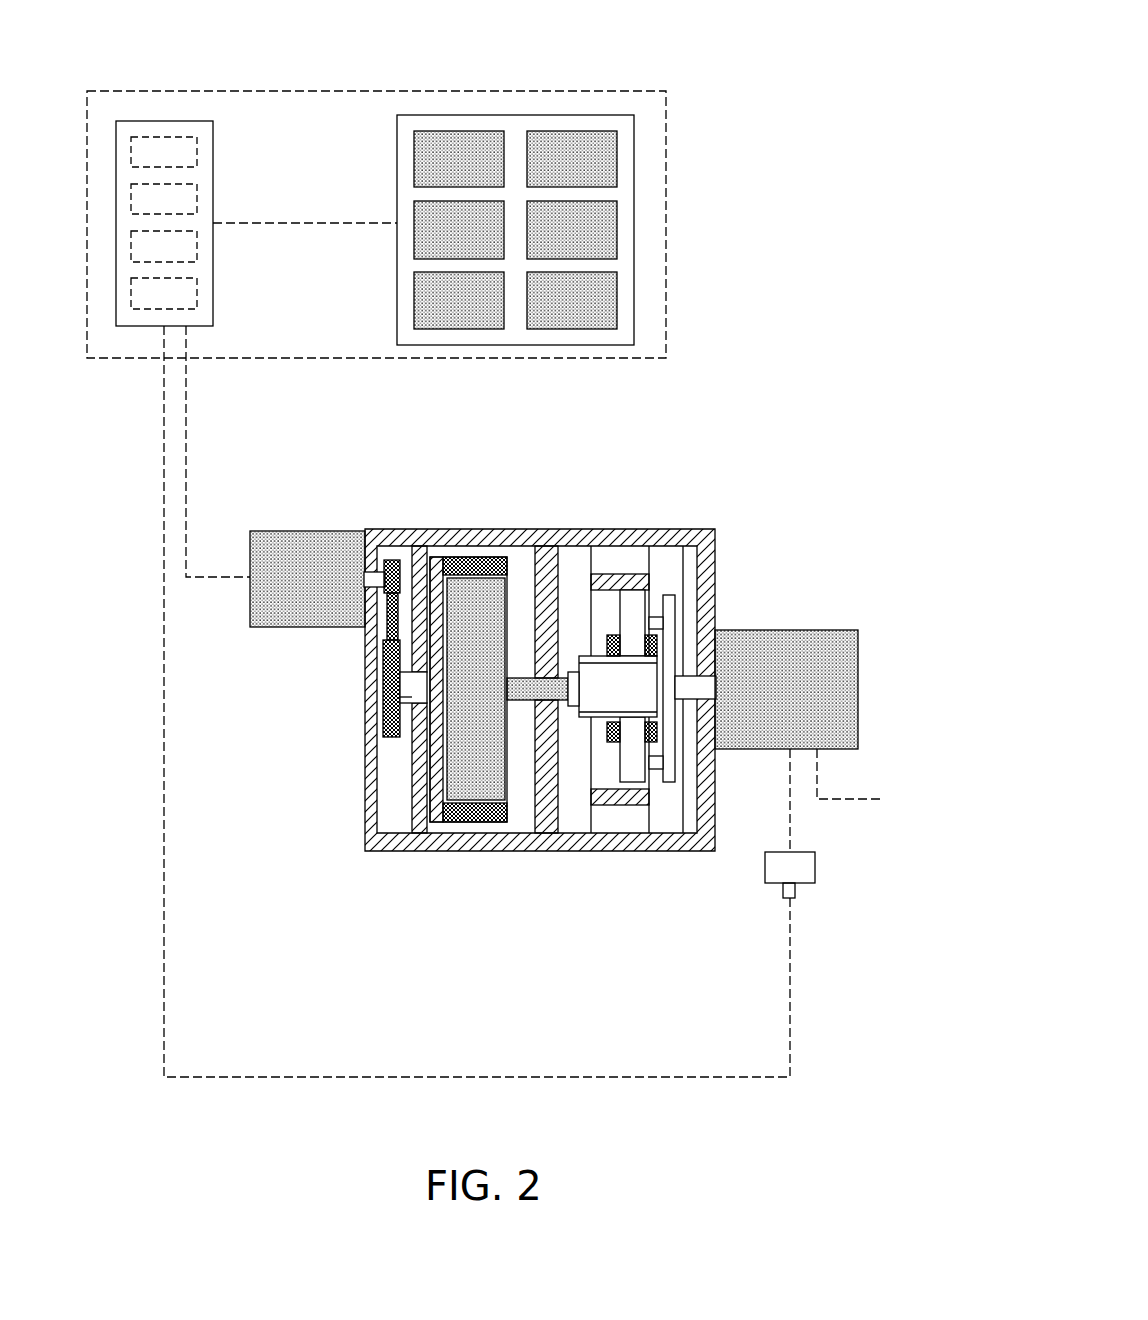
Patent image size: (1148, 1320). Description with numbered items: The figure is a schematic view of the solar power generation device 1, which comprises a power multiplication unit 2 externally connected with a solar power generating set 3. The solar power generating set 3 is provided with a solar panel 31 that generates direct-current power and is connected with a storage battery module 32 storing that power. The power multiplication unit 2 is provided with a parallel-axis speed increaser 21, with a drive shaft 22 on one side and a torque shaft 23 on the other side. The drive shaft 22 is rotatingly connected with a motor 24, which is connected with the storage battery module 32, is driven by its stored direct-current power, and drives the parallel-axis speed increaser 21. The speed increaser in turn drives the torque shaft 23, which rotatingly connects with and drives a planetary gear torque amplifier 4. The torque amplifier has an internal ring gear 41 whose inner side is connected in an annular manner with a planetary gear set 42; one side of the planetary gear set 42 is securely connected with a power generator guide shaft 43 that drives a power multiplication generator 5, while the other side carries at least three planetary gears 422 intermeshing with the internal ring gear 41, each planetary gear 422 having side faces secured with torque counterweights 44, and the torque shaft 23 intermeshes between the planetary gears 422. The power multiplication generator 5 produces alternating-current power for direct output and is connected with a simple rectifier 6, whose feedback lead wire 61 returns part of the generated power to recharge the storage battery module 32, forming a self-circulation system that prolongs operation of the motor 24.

The solar power generation device 1 is at (838, 170).
The power multiplication unit 2 is at (526, 529).
The solar power generating set 3 is at (665, 120).
The solar panel 31 is at (450, 150).
The storage battery module 32 is at (143, 121).
The planetary gear torque amplifier 4 is at (625, 565).
The internal ring gear 41 is at (606, 578).
The planetary gear set 42 is at (675, 596).
The planetary gear 422 is at (658, 622).
The power generator guide shaft 43 is at (686, 681).
The torque counterweight 44 is at (607, 643).
The power multiplication generator 5 is at (820, 648).
The rectifier 6 is at (802, 863).
The feedback lead wire 61 is at (792, 1030).
The parallel-axis speed increaser 21 is at (476, 784).
The drive shaft 22 is at (407, 702).
The torque shaft 23 is at (523, 692).
The motor 24 is at (297, 542).